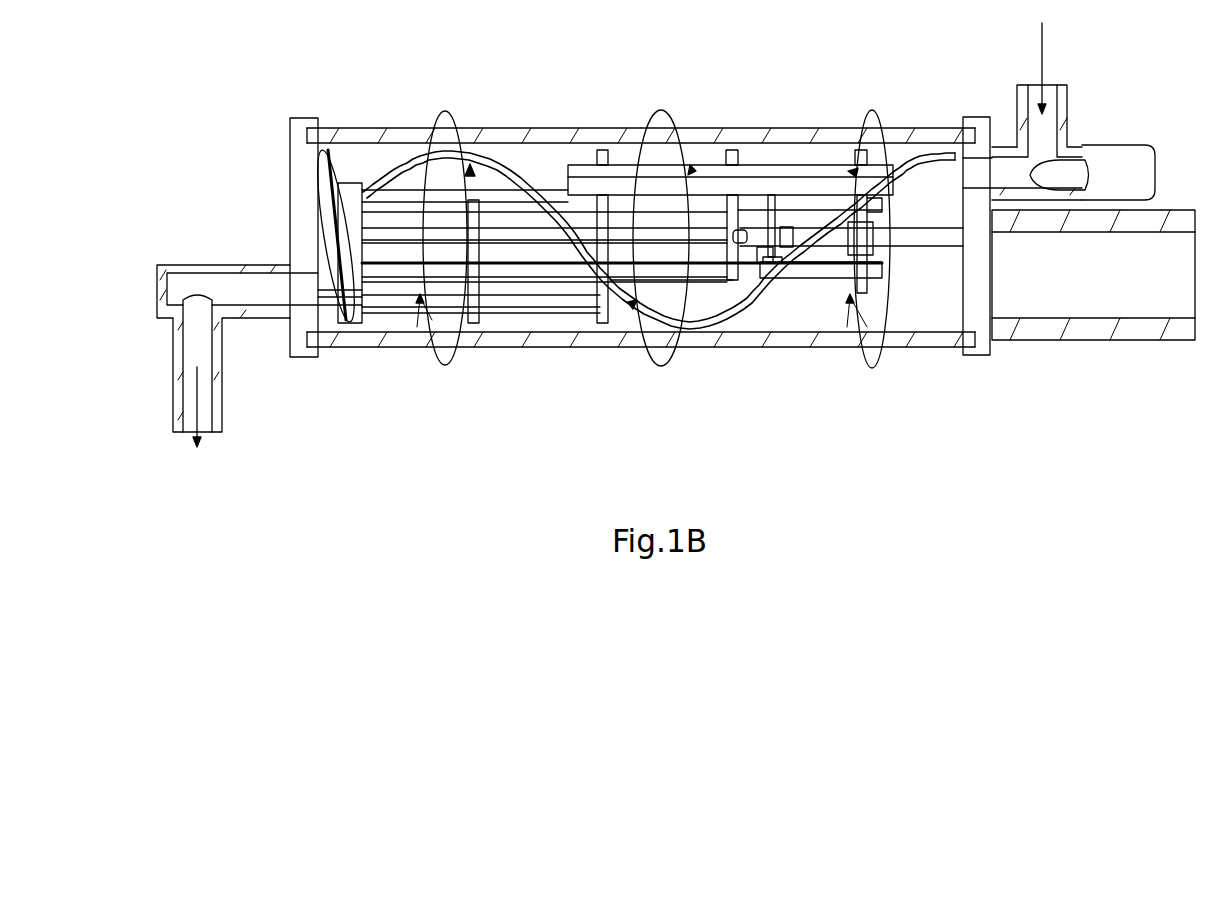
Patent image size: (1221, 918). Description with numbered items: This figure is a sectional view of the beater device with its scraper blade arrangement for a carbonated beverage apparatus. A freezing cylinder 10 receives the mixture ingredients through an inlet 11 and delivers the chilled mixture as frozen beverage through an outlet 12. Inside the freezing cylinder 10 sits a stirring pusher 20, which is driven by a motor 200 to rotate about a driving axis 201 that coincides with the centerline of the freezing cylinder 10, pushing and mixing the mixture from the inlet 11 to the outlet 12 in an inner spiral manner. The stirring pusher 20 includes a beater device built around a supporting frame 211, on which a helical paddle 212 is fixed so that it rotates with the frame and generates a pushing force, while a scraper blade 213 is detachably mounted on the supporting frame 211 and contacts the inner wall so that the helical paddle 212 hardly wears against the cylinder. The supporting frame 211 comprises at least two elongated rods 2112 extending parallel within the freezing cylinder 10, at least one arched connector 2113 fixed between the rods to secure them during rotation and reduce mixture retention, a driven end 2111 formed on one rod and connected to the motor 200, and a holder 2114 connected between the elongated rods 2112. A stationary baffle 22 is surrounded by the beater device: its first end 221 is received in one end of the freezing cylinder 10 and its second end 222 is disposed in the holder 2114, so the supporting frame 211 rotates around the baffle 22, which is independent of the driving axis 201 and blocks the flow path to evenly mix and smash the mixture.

The freezing cylinder 10 is at (843, 128).
The inlet 11 is at (1067, 107).
The outlet 12 is at (178, 402).
The stirring pusher 20 is at (639, 299).
The baffle 22 is at (748, 432).
The motor 200 is at (1113, 287).
The driving axis 201 is at (910, 240).
The supporting frame 211 is at (643, 265).
The helical paddle 212 is at (682, 282).
The scraper blade 213 is at (712, 165).
The first end 221 is at (422, 297).
The second end 222 is at (767, 268).
The driven end 2111 is at (900, 277).
The elongated rods 2112 is at (817, 268).
The arched connector 2113 is at (594, 300).
The holder 2114 is at (773, 197).